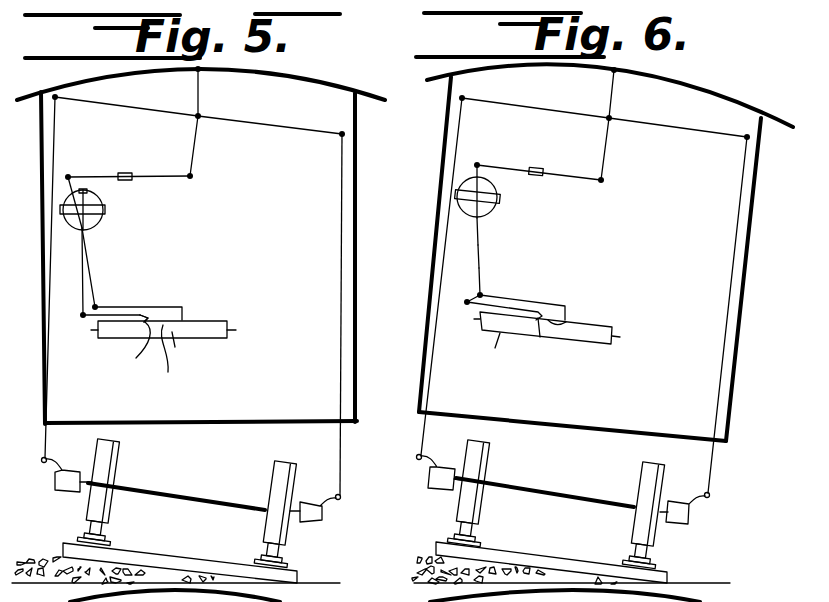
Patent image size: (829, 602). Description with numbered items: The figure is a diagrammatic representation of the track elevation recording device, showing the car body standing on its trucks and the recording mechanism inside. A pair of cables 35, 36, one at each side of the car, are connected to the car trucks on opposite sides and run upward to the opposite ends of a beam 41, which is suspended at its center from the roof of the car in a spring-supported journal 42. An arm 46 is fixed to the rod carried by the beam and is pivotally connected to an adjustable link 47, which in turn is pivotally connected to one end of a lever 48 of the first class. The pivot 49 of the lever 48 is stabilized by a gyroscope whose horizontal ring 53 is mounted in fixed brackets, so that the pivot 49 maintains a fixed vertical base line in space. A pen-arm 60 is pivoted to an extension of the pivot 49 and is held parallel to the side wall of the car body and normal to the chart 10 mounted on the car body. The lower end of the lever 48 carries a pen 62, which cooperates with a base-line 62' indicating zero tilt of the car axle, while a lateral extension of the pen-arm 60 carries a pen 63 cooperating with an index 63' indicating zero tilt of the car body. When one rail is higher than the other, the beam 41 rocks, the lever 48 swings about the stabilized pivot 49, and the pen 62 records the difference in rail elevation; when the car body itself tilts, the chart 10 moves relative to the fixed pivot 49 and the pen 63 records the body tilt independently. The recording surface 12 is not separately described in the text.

In FIG. 5, the chart 10 is at (163, 318).
In FIG. 6, the chart 10 is at (547, 339).
In FIG. 5, the insulating base of contact bar 12 is at (183, 351).
In FIG. 6, the insulating base of contact bar 12 is at (490, 352).
In FIG. 5, the cable 35 is at (50, 372).
In FIG. 6, the cable 35 is at (430, 385).
In FIG. 5, the cable 36 is at (340, 350).
In FIG. 6, the cable 36 is at (718, 404).
In FIG. 5, the beam 41 is at (153, 111).
In FIG. 6, the beam 41 is at (521, 107).
In FIG. 5, the spring-supported journal 42 is at (199, 90).
In FIG. 6, the spring-supported journal 42 is at (610, 95).
In FIG. 5, the arm 46 is at (193, 152).
In FIG. 6, the arm 46 is at (603, 152).
In FIG. 5, the adjustable link 47 is at (98, 178).
In FIG. 6, the adjustable link 47 is at (556, 179).
In FIG. 5, the lever 48 is at (88, 278).
In FIG. 6, the lever 48 is at (479, 252).
In FIG. 5, the pivot 49 is at (86, 242).
In FIG. 6, the pivot 49 is at (479, 233).
In FIG. 5, the horizontal ring 53 is at (105, 210).
In FIG. 6, the horizontal ring 53 is at (500, 198).
In FIG. 5, the pen-arm 60 is at (83, 298).
In FIG. 6, the pen-arm 60 is at (480, 277).
In FIG. 5, the pen 62 is at (142, 301).
In FIG. 6, the pen 62 is at (524, 293).
In FIG. 5, the base-line 62' is at (172, 362).
In FIG. 6, the base-line 62' is at (583, 311).
In FIG. 5, the pen 63 is at (127, 328).
In FIG. 6, the pen 63 is at (511, 332).
In FIG. 5, the index 63' is at (131, 353).